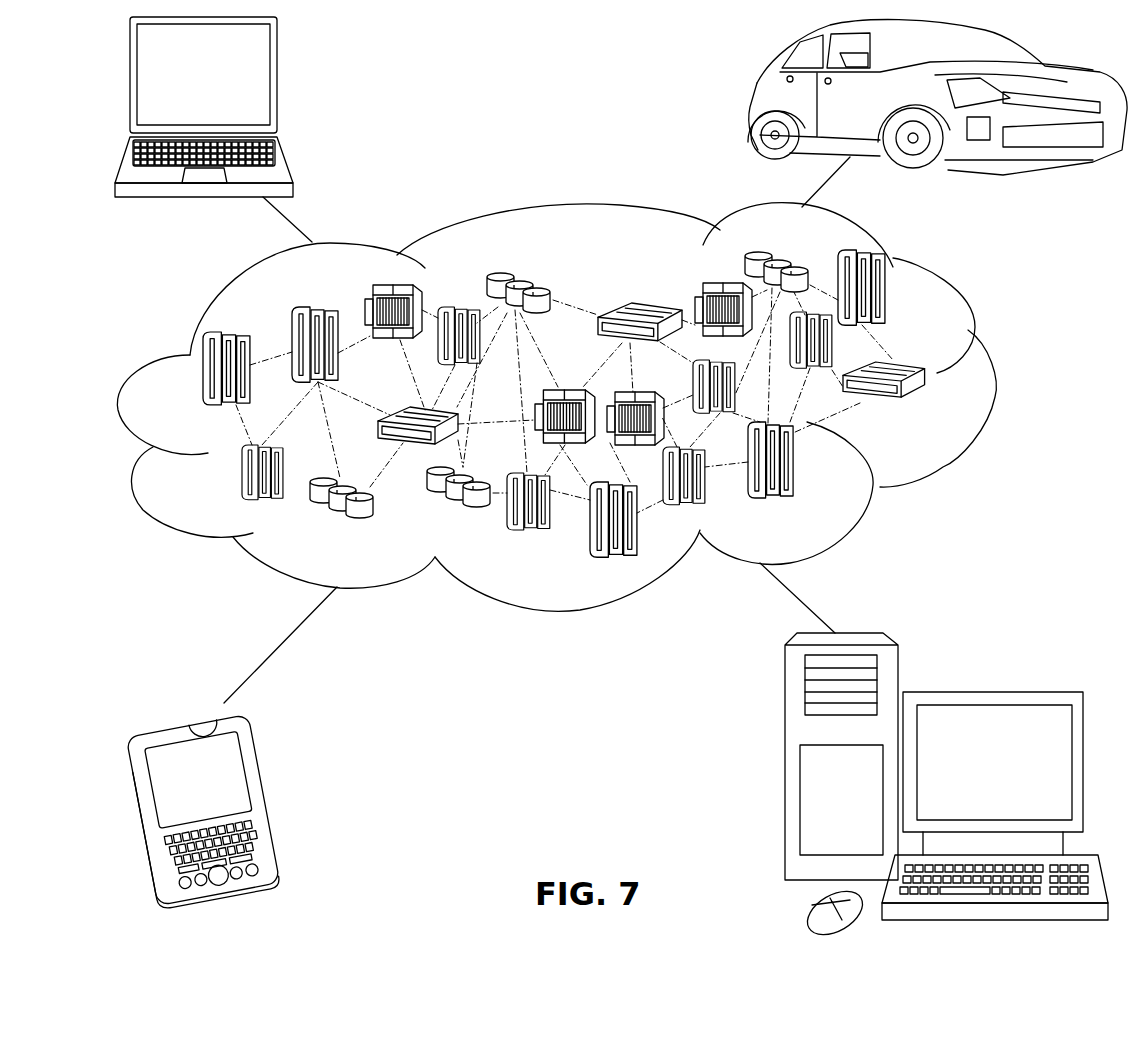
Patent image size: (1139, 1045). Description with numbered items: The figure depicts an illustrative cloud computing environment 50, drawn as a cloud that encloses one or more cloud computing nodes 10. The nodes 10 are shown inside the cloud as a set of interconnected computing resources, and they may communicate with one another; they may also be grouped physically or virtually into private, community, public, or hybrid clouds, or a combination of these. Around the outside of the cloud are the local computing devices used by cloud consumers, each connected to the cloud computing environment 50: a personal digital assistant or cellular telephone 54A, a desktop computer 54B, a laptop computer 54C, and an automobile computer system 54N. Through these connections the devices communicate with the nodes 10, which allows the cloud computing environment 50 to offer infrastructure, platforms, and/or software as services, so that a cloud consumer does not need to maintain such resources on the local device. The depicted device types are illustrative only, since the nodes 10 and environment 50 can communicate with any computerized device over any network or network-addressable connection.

The cloud computing node 10 is at (940, 416).
The cloud computing environment 50 is at (993, 379).
The personal digital assistant or cellular telephone 54A is at (267, 797).
The desktop computer 54B is at (987, 692).
The laptop computer 54C is at (280, 83).
The automobile computer system 54N is at (752, 100).